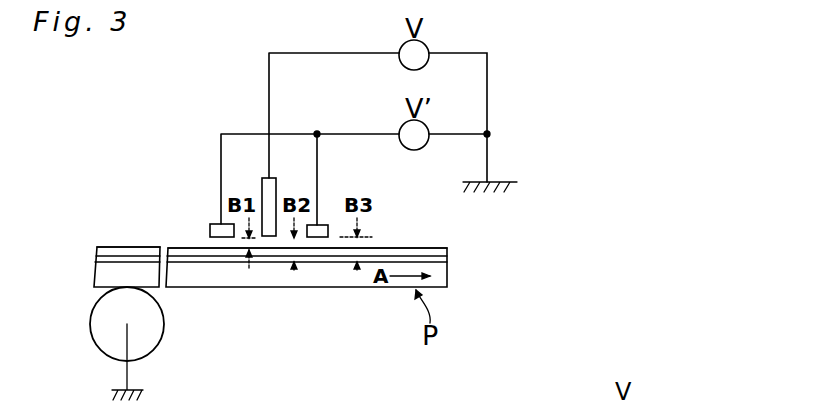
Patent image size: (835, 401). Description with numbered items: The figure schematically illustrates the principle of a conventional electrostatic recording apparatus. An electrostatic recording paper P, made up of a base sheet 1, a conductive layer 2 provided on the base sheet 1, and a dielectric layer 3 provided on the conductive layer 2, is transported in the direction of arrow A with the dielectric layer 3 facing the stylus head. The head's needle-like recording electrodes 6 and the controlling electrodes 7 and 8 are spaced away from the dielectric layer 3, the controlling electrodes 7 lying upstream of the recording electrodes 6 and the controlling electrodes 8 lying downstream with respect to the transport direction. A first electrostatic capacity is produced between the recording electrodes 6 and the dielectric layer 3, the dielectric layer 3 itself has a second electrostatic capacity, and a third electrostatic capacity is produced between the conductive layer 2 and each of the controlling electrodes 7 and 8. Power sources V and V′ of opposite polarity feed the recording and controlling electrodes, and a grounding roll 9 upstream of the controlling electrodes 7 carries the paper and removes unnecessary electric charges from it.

The base sheet 1 is at (440, 284).
The conductive layer 2 is at (447, 259).
The dielectric layer 3 is at (447, 252).
The recording electrodes 6 is at (267, 190).
The controlling electrodes 7 is at (212, 228).
The controlling electrodes 8 is at (320, 228).
The grounding roll 9 is at (101, 330).